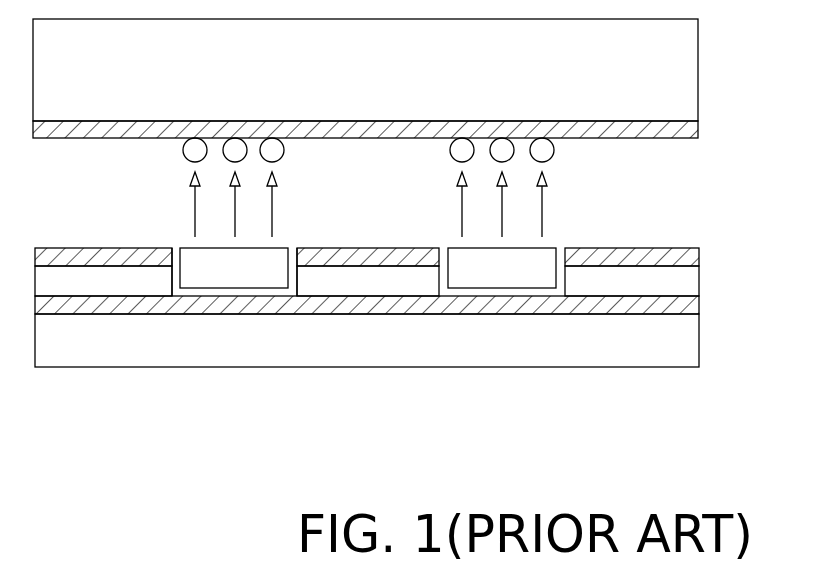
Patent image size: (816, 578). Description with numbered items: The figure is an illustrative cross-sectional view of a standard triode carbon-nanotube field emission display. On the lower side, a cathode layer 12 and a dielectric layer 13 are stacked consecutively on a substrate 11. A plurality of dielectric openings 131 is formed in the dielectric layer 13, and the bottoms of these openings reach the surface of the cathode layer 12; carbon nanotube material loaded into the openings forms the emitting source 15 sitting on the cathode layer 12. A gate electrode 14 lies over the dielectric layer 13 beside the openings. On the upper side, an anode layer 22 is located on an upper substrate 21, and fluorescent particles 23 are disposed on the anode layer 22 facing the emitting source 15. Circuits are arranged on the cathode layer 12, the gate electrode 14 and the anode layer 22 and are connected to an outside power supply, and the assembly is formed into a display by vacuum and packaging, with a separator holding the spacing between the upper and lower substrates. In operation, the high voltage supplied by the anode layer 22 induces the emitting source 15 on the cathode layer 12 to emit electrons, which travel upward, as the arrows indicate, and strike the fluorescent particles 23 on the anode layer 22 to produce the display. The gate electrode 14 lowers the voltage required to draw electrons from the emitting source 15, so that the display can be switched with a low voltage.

The substrate 11 is at (690, 350).
The cathode layer 12 is at (697, 298).
The dielectric layer 13 is at (692, 283).
The dielectric openings 131 is at (175, 245).
The gate electrode 14 is at (696, 256).
The emitting source 15 is at (221, 275).
The upper substrate 21 is at (689, 70).
The anode layer 22 is at (697, 128).
The fluorescent particles 23 is at (185, 153).